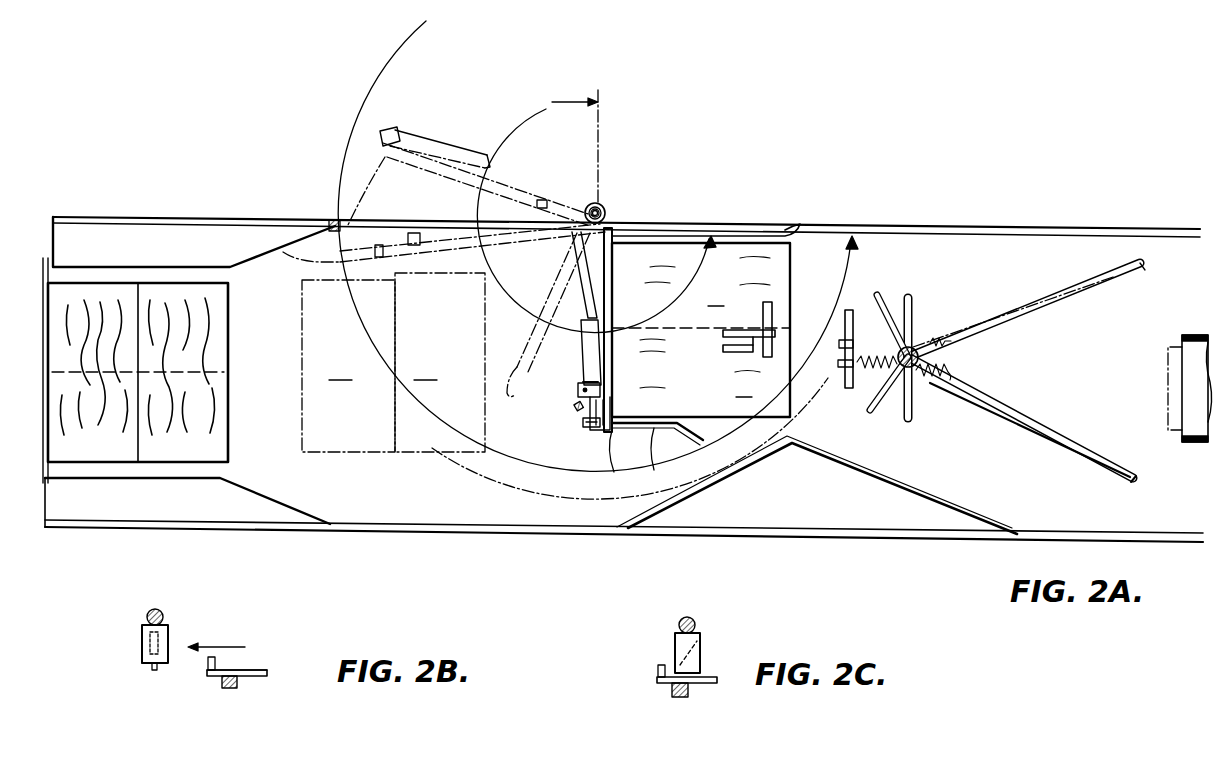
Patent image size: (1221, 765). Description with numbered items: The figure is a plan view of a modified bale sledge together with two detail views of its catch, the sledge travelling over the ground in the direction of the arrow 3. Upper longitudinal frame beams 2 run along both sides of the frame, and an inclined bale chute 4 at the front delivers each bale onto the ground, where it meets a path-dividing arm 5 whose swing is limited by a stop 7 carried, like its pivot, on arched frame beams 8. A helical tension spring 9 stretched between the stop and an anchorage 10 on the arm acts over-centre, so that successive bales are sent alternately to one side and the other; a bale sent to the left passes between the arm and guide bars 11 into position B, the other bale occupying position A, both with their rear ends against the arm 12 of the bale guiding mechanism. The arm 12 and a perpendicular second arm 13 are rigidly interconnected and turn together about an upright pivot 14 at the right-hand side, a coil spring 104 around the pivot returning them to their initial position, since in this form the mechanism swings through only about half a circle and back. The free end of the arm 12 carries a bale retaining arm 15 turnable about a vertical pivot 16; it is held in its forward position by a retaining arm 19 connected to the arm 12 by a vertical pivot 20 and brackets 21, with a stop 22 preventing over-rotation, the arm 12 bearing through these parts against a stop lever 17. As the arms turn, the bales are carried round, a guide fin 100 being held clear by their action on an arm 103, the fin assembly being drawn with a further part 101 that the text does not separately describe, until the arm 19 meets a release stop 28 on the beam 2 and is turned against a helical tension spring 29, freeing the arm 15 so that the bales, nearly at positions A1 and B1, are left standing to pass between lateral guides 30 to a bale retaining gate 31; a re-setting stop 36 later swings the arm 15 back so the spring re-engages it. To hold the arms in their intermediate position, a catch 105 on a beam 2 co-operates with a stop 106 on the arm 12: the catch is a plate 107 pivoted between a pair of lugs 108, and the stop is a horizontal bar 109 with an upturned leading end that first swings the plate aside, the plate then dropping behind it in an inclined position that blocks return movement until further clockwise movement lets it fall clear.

In FIG. 2A, the longitudinal beams 2 is at (962, 228).
In FIG. 2B, the longitudinal beams 2 is at (149, 610).
In FIG. 2C, the longitudinal beams 2 is at (678, 615).
In FIG. 2A, the direction of operative travel 3 is at (1048, 156).
In FIG. 2A, the bale chute 4 is at (1180, 440).
In FIG. 2A, the path-dividing arm 5 is at (1132, 480).
In FIG. 2A, the stop 7 is at (840, 361).
In FIG. 2A, the arched frame beams 8 is at (845, 385).
In FIG. 2A, the helical tension spring 9 is at (916, 378).
In FIG. 2A, the anchorage 10 is at (950, 368).
In FIG. 2A, the guide bars 11 is at (880, 480).
In FIG. 2A, the arm of bale guiding mechanism 12 is at (613, 353).
In FIG. 2B, the arm of bale guiding mechanism 12 is at (238, 686).
In FIG. 2C, the arm of bale guiding mechanism 12 is at (689, 692).
In FIG. 2A, the second arm of bale guiding mechanism 13 is at (712, 240).
In FIG. 2A, the upright pivot 14 is at (607, 212).
In FIG. 2A, the bale retaining arm 15 is at (292, 271).
In FIG. 2A, the vertical pivot 16 is at (385, 153).
In FIG. 2A, the stop lever 17 is at (577, 409).
In FIG. 2A, the retaining arm 19 is at (477, 152).
In FIG. 2A, the vertical pivot 20 is at (578, 392).
In FIG. 2A, the brackets 21 is at (584, 379).
In FIG. 2A, the stop 22 is at (609, 403).
In FIG. 2A, the release stop 28 is at (473, 221).
In FIG. 2A, the helical tension spring 29 is at (587, 438).
In FIG. 2A, the lateral guides 30 is at (136, 258).
In FIG. 2A, the bale retaining door or gate 31 is at (50, 468).
In FIG. 2A, the re-setting stop 36 is at (332, 220).
In FIG. 2A, the guide fin 100 is at (730, 332).
In FIG. 2A, the float plate 101 is at (772, 310).
In FIG. 2A, the arm 103 is at (724, 351).
In FIG. 2A, the coil spring 104 is at (595, 208).
In FIG. 2A, the catch 105 is at (535, 216).
In FIG. 2B, the catch 105 is at (175, 619).
In FIG. 2A, the stop 106 is at (458, 262).
In FIG. 2B, the stop 106 is at (278, 682).
In FIG. 2B, the plate 107 is at (143, 661).
In FIG. 2C, the plate 107 is at (675, 660).
In FIG. 2B, the lugs 108 is at (160, 672).
In FIG. 2B, the bar 109 is at (242, 669).
In FIG. 2C, the bar 109 is at (670, 685).
In FIG. 2A, the bale position A is at (716, 297).
In FIG. 2A, the bale position B is at (744, 388).
In FIG. 2A, the bale position A1 is at (440, 362).
In FIG. 2A, the bale position B1 is at (348, 366).